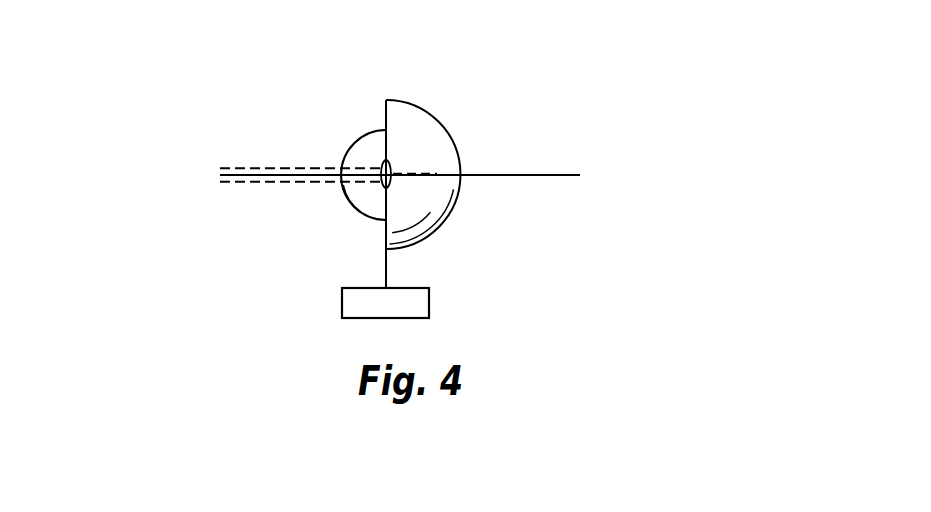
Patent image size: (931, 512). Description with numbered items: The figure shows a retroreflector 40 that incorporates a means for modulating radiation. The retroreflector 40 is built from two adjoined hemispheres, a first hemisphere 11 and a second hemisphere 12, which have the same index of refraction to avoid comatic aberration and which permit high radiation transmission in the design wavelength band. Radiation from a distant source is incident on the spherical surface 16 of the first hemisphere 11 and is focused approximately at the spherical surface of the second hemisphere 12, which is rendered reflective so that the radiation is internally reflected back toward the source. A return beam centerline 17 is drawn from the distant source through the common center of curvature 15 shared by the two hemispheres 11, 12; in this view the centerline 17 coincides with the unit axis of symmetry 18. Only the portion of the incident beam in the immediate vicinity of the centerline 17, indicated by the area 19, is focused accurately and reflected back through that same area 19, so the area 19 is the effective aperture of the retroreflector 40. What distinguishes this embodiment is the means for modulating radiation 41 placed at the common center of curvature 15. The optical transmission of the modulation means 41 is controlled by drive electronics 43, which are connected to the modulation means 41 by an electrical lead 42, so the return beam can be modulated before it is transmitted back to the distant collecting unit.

The retroreflector 40 is at (485, 168).
The first hemisphere 11 is at (337, 145).
The second hemisphere 12 is at (449, 160).
The means for modulating radiation 41 is at (470, 150).
The common center of curvature 15 is at (480, 213).
The spherical surface 16 is at (328, 229).
The effective aperture 19 is at (257, 120).
The return beam centerline 17 is at (534, 188).
The unit axis of symmetry 18 is at (534, 201).
The electrical lead 42 is at (389, 269).
The drive electronics 43 is at (431, 306).